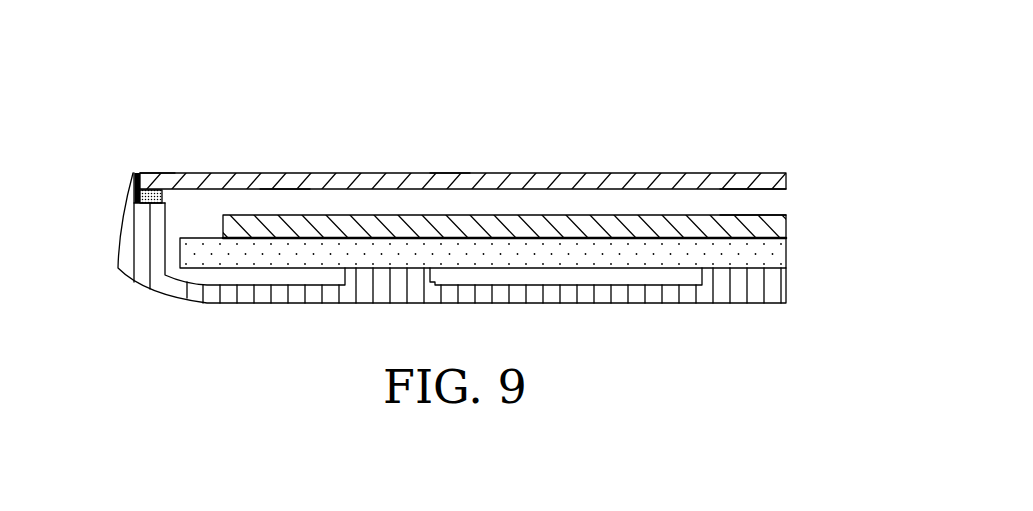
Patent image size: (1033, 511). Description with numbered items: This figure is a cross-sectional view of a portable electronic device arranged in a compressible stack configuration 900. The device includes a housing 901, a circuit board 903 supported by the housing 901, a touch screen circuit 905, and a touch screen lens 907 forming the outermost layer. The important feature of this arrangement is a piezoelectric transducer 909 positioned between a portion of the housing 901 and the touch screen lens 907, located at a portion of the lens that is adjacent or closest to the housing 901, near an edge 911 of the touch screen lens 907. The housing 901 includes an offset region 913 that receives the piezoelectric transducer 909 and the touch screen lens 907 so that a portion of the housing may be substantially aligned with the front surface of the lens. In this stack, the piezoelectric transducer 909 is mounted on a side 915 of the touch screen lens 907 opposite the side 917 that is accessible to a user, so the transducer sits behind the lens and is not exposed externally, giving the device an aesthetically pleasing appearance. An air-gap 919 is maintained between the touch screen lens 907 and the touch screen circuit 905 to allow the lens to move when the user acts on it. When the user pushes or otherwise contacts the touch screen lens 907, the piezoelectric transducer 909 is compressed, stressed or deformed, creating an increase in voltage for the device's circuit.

The compressible stack configuration 900 is at (714, 36).
The housing 901 is at (128, 238).
The circuit board 903 is at (787, 251).
The touch screen circuit 905 is at (370, 218).
The touch screen lens 907 is at (557, 180).
The piezoelectric transducer 909 is at (163, 199).
The edge of the touch screen lens 911 is at (155, 173).
The offset region 913 is at (131, 197).
The side of the touch screen lens 915 is at (283, 183).
The side accessible to a user 917 is at (452, 143).
The air-gap 919 is at (787, 204).